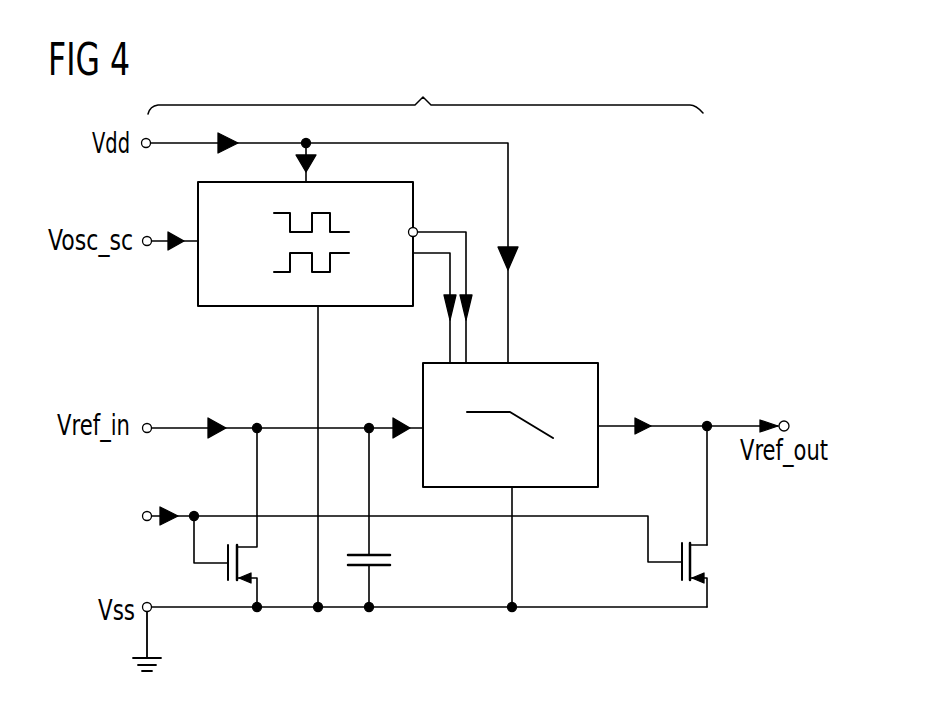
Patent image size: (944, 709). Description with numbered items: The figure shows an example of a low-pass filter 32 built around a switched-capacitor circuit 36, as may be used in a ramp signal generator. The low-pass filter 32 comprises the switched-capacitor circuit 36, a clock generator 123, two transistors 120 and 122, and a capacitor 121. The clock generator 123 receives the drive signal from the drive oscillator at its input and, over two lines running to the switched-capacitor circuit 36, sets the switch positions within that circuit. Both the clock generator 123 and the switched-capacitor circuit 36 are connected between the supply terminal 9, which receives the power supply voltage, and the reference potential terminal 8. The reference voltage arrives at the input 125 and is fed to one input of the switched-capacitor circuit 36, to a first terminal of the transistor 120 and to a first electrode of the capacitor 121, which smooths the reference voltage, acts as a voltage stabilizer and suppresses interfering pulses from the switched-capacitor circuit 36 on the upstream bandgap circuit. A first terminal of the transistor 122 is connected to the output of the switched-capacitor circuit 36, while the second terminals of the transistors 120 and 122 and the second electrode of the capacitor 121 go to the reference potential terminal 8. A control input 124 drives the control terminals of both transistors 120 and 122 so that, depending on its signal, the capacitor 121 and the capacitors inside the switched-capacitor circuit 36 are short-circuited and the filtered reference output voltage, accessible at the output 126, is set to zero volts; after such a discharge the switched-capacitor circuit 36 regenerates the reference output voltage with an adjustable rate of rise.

The low-pass filter 32 is at (425, 88).
The supply terminal 9 is at (146, 148).
The clock generator 123 is at (413, 205).
The switched-capacitor circuit 36 is at (573, 362).
The output 126 is at (784, 420).
The input 125 is at (145, 433).
The control input 124 is at (145, 521).
The transistor 120 is at (246, 562).
The capacitor 121 is at (388, 562).
The transistor 122 is at (696, 560).
The reference potential terminal 8 is at (160, 660).